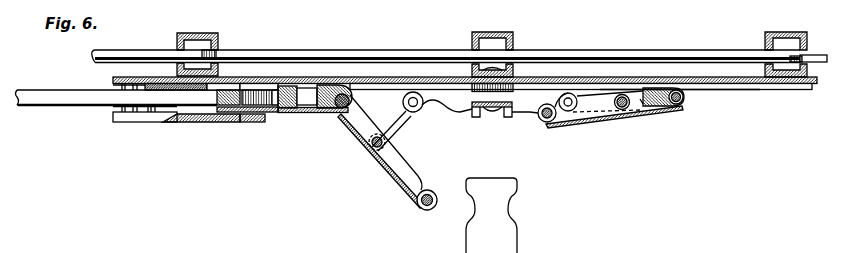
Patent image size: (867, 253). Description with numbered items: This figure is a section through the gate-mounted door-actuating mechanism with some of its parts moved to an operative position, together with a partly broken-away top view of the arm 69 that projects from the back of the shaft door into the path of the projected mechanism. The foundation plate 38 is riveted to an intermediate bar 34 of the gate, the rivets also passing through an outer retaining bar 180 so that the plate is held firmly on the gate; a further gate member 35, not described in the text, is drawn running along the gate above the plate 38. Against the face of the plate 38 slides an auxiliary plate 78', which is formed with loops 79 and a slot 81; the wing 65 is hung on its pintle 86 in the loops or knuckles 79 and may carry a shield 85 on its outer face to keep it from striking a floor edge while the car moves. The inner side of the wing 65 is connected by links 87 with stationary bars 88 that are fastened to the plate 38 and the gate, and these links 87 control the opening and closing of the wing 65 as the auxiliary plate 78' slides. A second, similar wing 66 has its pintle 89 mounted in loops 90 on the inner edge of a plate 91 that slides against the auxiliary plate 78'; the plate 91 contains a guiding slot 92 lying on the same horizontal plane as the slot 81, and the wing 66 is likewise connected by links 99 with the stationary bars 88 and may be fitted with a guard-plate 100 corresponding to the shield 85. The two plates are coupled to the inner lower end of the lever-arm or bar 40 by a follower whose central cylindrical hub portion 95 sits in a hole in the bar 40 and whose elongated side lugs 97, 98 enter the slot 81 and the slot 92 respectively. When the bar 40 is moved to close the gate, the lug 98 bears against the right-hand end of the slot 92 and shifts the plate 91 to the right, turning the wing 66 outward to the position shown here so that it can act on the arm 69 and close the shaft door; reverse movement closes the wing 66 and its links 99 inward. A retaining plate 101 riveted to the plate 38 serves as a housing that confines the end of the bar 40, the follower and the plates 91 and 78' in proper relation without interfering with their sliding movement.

The intermediate bar 34 is at (218, 38).
The rod 35 is at (459, 49).
The plate 38 is at (571, 79).
The lever-arm or bar 40 is at (117, 111).
The wing 65 is at (556, 128).
The wing 66 is at (387, 157).
The arm or finger 69 is at (507, 227).
The auxiliary plate 78' is at (680, 58).
The loops 79 is at (688, 100).
The slot 81 is at (232, 84).
The shield 85 is at (633, 120).
The pintle 86 is at (682, 108).
The links 87 is at (590, 107).
The stationary bars 88 is at (463, 103).
The pintle 89 is at (338, 117).
The loops 90 is at (359, 78).
The plate 91 is at (303, 112).
The guiding slot 92 is at (218, 115).
The central cylindrical hub portion 95 is at (253, 113).
The side lug 97 is at (265, 87).
The side lug 98 is at (266, 118).
The links 99 is at (395, 128).
The shield or guard-plate 100 is at (371, 148).
The retaining plate 101 is at (165, 122).
The outer retaining bar 180 is at (476, 112).